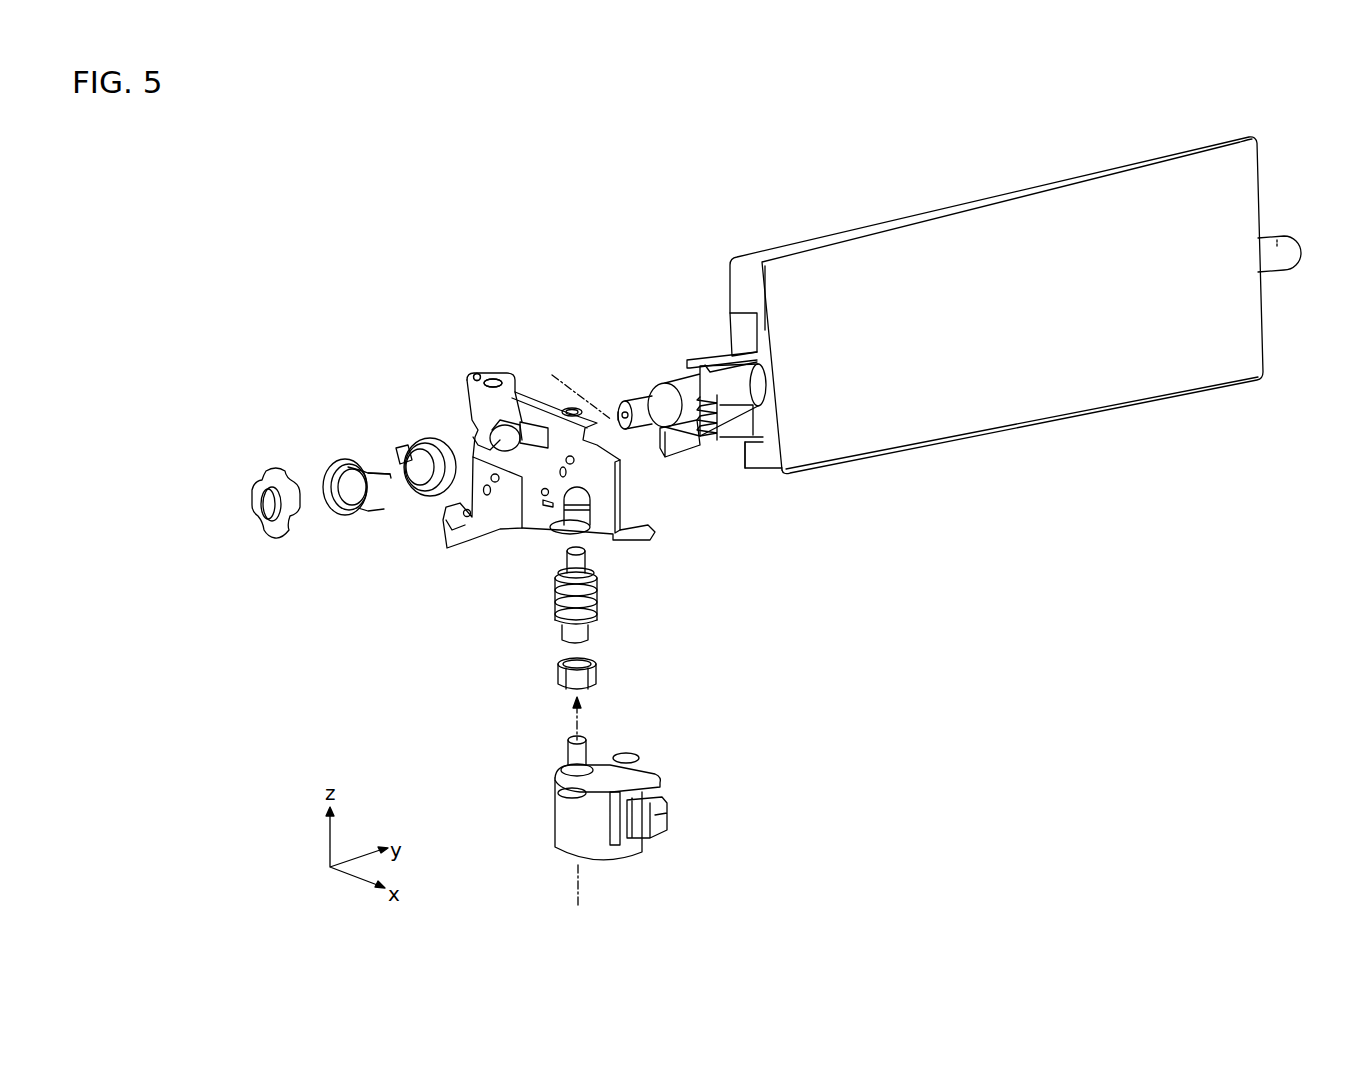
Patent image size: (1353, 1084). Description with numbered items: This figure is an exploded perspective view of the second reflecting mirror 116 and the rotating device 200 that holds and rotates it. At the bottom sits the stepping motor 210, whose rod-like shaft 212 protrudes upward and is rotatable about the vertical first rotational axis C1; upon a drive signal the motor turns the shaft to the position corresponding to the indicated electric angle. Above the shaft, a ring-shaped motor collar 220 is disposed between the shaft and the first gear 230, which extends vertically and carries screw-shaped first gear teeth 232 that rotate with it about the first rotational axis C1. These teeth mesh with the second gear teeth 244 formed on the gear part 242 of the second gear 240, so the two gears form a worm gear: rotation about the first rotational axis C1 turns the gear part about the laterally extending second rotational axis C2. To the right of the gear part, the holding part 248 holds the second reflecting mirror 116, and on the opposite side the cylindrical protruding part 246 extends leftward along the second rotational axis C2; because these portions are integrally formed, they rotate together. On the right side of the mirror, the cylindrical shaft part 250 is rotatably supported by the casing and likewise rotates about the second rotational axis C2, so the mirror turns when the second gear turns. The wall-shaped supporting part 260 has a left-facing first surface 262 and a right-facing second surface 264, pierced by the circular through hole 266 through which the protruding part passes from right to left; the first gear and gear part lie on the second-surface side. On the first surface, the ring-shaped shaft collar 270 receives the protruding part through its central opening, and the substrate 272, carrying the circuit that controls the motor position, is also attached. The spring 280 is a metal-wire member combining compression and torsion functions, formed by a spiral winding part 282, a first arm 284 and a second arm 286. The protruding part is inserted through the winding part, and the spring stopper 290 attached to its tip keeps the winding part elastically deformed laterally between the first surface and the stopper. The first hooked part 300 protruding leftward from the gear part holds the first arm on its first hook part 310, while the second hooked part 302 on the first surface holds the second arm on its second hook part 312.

The second reflecting mirror 116 is at (995, 215).
The shaft part 250 is at (1278, 236).
The holding part 248 is at (718, 370).
The second gear 240 is at (712, 362).
The gear part 242 is at (660, 378).
The protruding part 246 is at (613, 417).
The second rotational axis C2 is at (574, 384).
The first hooked part 300 is at (693, 457).
The second gear teeth 244 is at (783, 447).
The supporting part 260 is at (655, 530).
The second surface 264 is at (610, 452).
The first hook part 310 is at (657, 438).
The second hooked part 302 is at (507, 425).
The second hook part 312 is at (480, 402).
The first surface 262 is at (477, 437).
The through hole 266 is at (503, 450).
The substrate 272 is at (502, 510).
The shaft collar 270 is at (410, 440).
The spring 280 is at (353, 530).
The winding part 282 is at (327, 463).
The second arm 286 is at (387, 467).
The first arm 284 is at (373, 513).
The spring stopper 290 is at (252, 500).
The first gear 230 is at (602, 607).
The first gear teeth 232 is at (598, 572).
The motor collar 220 is at (600, 673).
The first rotational axis C1 is at (577, 720).
The shaft 212 is at (588, 752).
The stepping motor 210 is at (566, 820).
The rotating device 200 is at (640, 870).